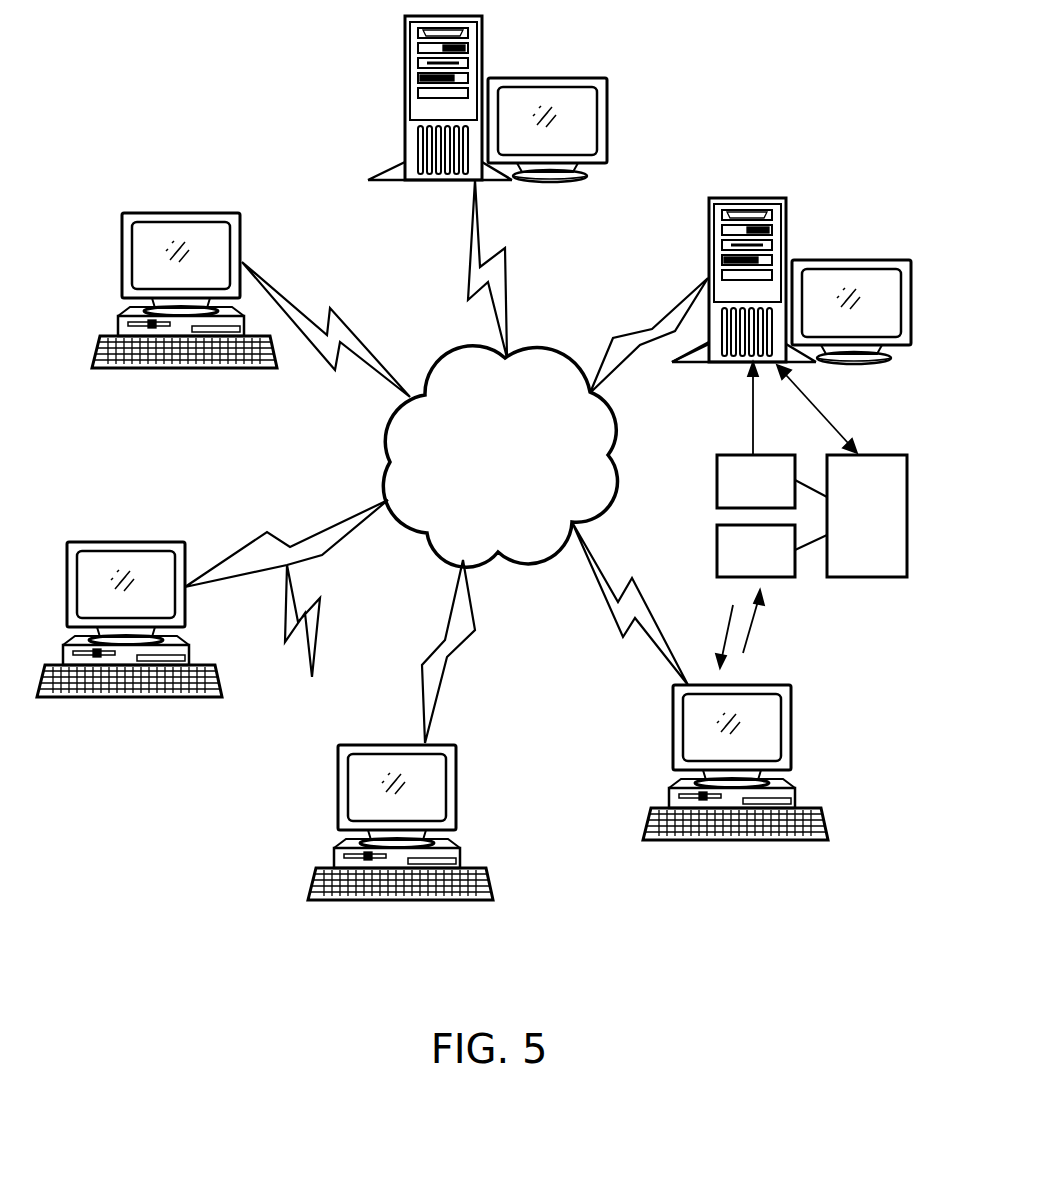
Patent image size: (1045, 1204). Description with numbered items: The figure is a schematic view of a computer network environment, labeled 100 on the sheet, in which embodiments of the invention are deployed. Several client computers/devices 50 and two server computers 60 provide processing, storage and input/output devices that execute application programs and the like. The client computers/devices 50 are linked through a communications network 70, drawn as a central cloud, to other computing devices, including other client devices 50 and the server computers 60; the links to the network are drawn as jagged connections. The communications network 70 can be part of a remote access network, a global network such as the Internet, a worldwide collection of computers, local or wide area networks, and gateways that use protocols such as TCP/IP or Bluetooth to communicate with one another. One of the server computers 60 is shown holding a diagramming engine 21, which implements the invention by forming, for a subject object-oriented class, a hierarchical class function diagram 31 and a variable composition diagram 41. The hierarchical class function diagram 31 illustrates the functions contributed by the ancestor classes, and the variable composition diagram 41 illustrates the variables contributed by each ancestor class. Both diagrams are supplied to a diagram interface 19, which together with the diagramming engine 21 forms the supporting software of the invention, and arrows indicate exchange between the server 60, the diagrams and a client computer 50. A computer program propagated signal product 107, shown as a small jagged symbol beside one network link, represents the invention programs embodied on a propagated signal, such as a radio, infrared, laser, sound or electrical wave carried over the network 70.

The system 100 is at (686, 26).
The communications network 70 is at (489, 485).
The server computer 60 is at (545, 78).
The client computer/device 50 is at (181, 213).
The diagramming engine 21 is at (695, 363).
The hierarchical class function diagram 31 is at (741, 496).
The variable composition diagram 41 is at (741, 565).
The diagram interface 19 is at (852, 528).
The computer program propagated signal product 107 is at (322, 648).